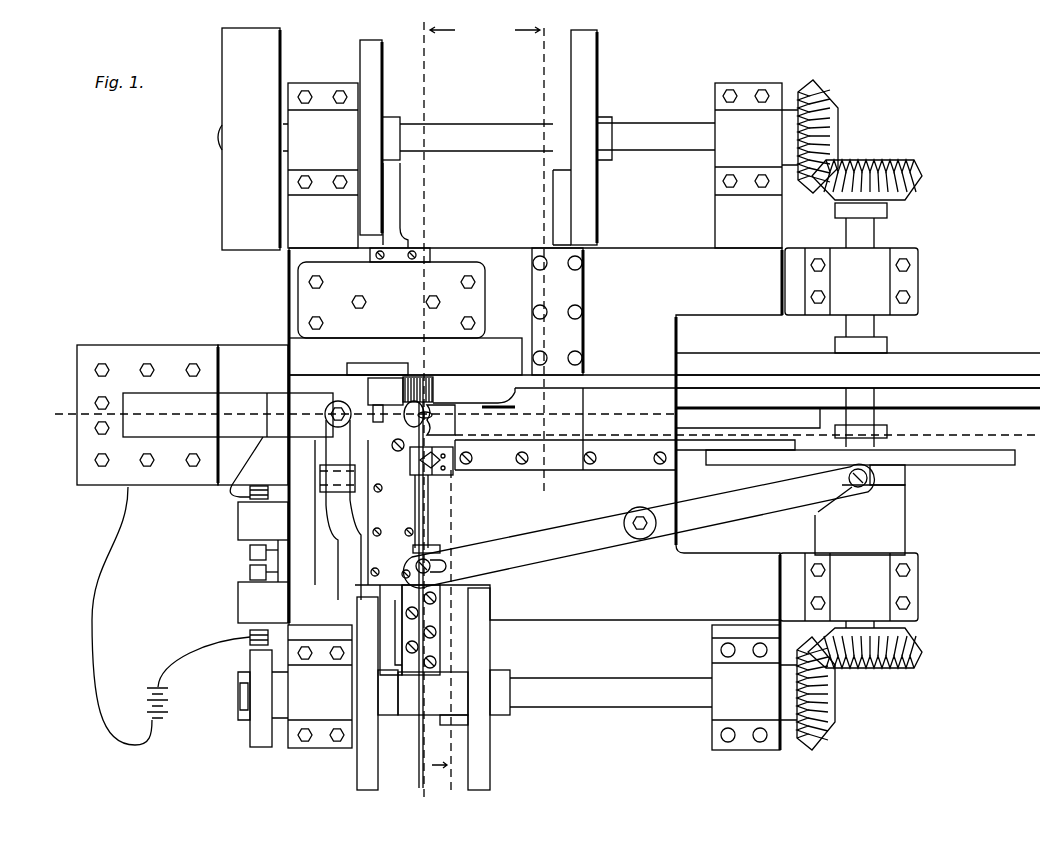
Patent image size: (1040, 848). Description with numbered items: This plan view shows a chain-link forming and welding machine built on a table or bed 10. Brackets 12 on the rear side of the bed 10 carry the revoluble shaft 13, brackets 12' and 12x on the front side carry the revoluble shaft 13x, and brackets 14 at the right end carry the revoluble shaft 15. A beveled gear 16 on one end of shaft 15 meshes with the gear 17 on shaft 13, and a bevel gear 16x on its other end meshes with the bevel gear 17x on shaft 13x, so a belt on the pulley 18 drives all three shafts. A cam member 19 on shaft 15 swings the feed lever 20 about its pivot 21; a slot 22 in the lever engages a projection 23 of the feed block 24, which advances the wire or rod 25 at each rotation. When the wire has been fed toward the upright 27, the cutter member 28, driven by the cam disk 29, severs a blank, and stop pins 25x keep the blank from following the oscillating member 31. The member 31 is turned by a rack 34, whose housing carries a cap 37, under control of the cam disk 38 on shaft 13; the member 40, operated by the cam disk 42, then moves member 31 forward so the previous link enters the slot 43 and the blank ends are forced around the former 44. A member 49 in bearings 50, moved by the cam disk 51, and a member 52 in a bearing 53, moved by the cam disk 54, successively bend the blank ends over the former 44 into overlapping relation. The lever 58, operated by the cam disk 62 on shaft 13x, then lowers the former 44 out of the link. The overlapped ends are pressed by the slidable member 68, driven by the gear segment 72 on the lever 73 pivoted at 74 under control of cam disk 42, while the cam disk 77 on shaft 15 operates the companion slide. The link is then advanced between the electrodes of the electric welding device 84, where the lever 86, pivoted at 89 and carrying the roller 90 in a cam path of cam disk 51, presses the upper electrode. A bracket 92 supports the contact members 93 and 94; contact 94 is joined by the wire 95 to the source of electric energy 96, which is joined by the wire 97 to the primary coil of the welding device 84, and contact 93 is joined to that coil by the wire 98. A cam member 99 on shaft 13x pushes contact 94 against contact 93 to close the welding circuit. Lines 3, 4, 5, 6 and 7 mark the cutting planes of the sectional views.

The section line 3— 3 is at (185, 415).
The section line 4— 4 is at (435, 411).
The section line 5— 5 is at (537, 258).
The section line 6— 6 is at (391, 534).
The section line 7— 7 is at (389, 501).
The table or bed 10 is at (547, 499).
The brackets 12 is at (535, 151).
The brackets 12' is at (320, 710).
The brackets 12x is at (745, 753).
The revoluble shaft 13 is at (634, 123).
The revoluble shaft 13x is at (603, 684).
The brackets 14 is at (920, 585).
The revoluble shaft 15 is at (872, 236).
The beveled gear 16 is at (912, 170).
The bevel gear 16x is at (880, 662).
The gear 17 is at (822, 98).
The bevel gear 17x is at (832, 708).
The pulley 18 is at (280, 42).
The cam member 19 is at (905, 518).
The feed lever 20 is at (748, 503).
The pivot 21 is at (640, 540).
The slot 22 is at (432, 566).
The projection 23 is at (418, 565).
The feed block 24 is at (430, 548).
The wire or rod 25 is at (419, 745).
The stop pins 25x is at (442, 450).
The upright 27 is at (435, 345).
The cutter member 28 is at (458, 452).
The cam disk 29 is at (727, 462).
The oscillating member 31 is at (455, 425).
The reciprocating rack 34 is at (560, 212).
The cap 37 is at (577, 288).
The cam disk 38 is at (598, 205).
The member 40 is at (676, 418).
The cam disk 42 is at (985, 410).
The slot 43 is at (452, 408).
The former 44 is at (412, 417).
The member 49 is at (385, 592).
The bearings 50 is at (402, 513).
The cam disk 51 is at (360, 778).
The member 52 is at (395, 225).
The bearing 53 is at (402, 256).
The cam disk 54 is at (375, 98).
The lever 58 is at (455, 715).
The cam disk 62 is at (492, 740).
The slidable member 68 is at (358, 370).
The gear segment 72 is at (440, 382).
The lever 73 is at (614, 382).
The pivot 74 is at (505, 404).
The cam disk 77 is at (950, 356).
The electric welding device 84 is at (125, 350).
The lever 86 is at (342, 553).
The pivot 89 is at (324, 473).
The roller 90 is at (352, 695).
The bracket 92 is at (238, 520).
The contact member 93 is at (250, 550).
The contact member 94 is at (250, 573).
The wire 95 is at (213, 656).
The source of electric energy 96 is at (168, 703).
The wire 97 is at (93, 605).
The wire 98 is at (252, 468).
The cam member 99 is at (252, 730).